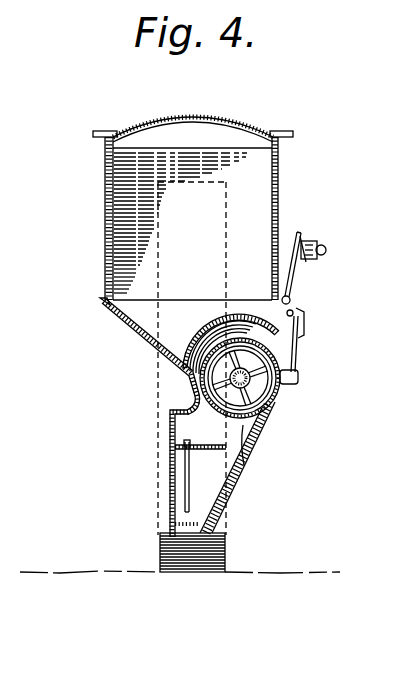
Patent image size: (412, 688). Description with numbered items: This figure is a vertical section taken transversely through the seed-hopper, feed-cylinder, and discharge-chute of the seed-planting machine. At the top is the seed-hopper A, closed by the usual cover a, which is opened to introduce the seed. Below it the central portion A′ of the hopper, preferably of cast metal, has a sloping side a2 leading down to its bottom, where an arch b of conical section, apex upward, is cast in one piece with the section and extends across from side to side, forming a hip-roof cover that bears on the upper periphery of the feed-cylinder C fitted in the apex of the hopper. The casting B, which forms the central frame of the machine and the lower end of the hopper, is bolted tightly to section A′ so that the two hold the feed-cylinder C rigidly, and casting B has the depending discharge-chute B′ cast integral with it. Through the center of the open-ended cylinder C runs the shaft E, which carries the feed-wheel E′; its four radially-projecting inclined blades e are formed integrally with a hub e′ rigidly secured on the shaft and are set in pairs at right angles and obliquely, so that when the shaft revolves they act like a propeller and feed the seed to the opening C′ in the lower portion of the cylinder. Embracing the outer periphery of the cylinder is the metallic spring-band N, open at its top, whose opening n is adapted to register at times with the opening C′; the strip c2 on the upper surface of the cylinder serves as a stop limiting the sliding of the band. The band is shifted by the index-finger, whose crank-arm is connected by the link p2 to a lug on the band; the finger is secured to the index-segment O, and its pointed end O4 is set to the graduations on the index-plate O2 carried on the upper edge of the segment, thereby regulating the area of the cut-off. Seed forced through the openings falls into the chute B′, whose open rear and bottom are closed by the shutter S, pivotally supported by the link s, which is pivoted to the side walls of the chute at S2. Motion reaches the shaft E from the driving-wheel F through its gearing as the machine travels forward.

The cover a is at (228, 128).
The seed-hopper A is at (105, 204).
The central portion of the hopper A′ is at (157, 322).
The sloping side a2 is at (144, 335).
The arch b is at (215, 330).
The strip c2 is at (237, 342).
The casting B is at (190, 386).
The discharge-chute B′ is at (175, 447).
The pivot of link on chute side walls S2 is at (205, 438).
The shutter S is at (183, 478).
The link s is at (160, 543).
The driving-wheel F is at (223, 547).
The opening in spring-band n is at (244, 466).
The opening in feed-cylinder C′ is at (258, 425).
The feed-wheel E′ is at (272, 413).
The shaft E is at (276, 393).
The spring-band N is at (268, 386).
The hub e′ is at (299, 378).
The inclined blades e is at (296, 364).
The feed-cylinder C is at (258, 347).
The link p2 is at (304, 325).
The index-segment O is at (294, 285).
The index-plate O2 is at (315, 243).
The pointed end of index-finger O4 is at (302, 238).